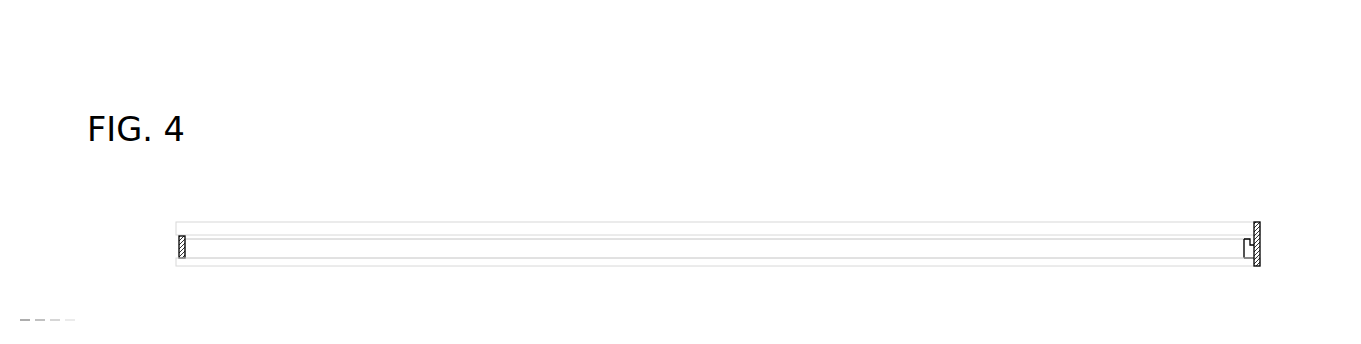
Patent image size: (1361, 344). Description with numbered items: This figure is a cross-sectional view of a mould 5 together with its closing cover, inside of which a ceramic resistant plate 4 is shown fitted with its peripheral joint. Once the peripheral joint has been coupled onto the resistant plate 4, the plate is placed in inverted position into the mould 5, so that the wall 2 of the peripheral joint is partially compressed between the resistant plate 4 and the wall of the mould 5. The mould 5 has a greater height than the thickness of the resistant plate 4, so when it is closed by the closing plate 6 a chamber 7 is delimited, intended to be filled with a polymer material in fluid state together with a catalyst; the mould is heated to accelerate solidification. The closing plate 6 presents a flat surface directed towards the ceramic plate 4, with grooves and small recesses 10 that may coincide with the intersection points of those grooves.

The wall of the peripheral joint 2 is at (1245, 248).
The resistant plate 4 is at (755, 248).
The mould 5 is at (180, 245).
The closing plate 6 is at (510, 231).
The chamber 7 is at (364, 237).
The small recesses 10 is at (1264, 120).